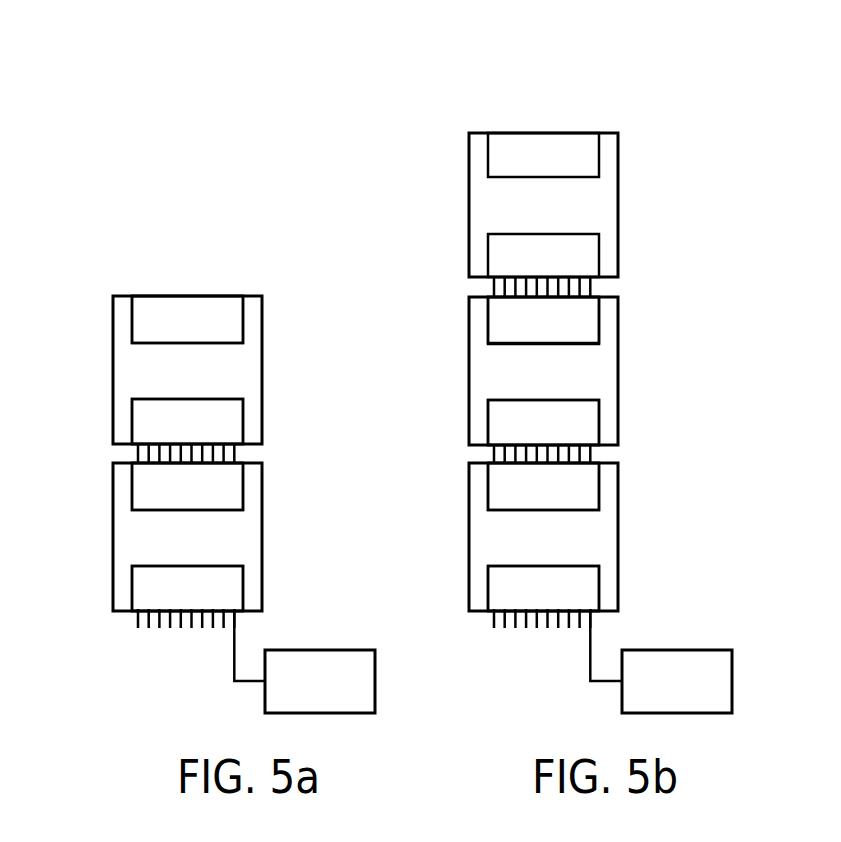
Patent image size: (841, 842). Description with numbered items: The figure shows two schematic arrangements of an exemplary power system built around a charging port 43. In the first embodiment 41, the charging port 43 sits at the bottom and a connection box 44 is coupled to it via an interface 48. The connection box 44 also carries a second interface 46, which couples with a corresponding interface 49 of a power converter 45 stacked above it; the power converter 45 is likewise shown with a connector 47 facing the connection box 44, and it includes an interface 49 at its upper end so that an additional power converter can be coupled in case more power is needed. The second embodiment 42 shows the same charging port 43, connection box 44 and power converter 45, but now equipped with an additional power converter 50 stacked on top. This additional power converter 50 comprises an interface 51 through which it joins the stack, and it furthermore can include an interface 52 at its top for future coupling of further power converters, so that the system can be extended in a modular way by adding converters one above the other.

In FIG. 5a, the embodiment 41 is at (89, 272).
In FIG. 5b, the embodiment 42 is at (438, 110).
In FIG. 5a, the charging port 43 is at (331, 692).
In FIG. 5b, the charging port 43 is at (687, 692).
In FIG. 5a, the connection box 44 is at (201, 547).
In FIG. 5b, the connection box 44 is at (557, 547).
In FIG. 5a, the power converter 45 is at (201, 382).
In FIG. 5b, the power converter 45 is at (557, 382).
In FIG. 5a, the second interface 46 is at (233, 485).
In FIG. 5b, the second interface 46 is at (590, 485).
In FIG. 5a, the connector of second module 47 is at (233, 420).
In FIG. 5b, the connector of second module 47 is at (590, 420).
In FIG. 5a, the interface 48 is at (233, 586).
In FIG. 5b, the interface 48 is at (590, 586).
In FIG. 5a, the interface 49 is at (233, 318).
In FIG. 5b, the interface 49 is at (590, 318).
In FIG. 5b, the additional power converter 50 is at (557, 218).
In FIG. 5b, the interface 51 is at (590, 255).
In FIG. 5b, the interface 52 is at (590, 153).